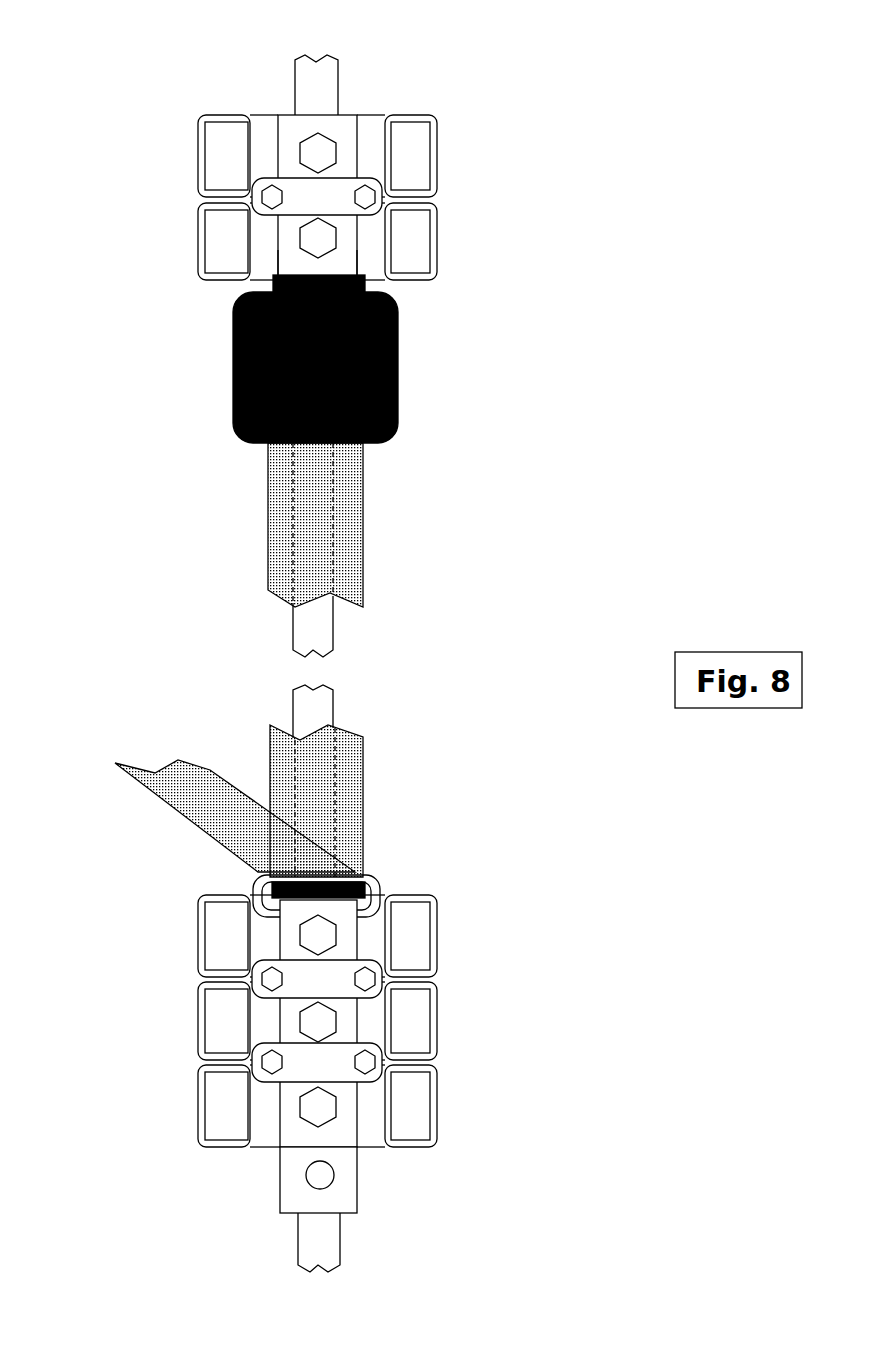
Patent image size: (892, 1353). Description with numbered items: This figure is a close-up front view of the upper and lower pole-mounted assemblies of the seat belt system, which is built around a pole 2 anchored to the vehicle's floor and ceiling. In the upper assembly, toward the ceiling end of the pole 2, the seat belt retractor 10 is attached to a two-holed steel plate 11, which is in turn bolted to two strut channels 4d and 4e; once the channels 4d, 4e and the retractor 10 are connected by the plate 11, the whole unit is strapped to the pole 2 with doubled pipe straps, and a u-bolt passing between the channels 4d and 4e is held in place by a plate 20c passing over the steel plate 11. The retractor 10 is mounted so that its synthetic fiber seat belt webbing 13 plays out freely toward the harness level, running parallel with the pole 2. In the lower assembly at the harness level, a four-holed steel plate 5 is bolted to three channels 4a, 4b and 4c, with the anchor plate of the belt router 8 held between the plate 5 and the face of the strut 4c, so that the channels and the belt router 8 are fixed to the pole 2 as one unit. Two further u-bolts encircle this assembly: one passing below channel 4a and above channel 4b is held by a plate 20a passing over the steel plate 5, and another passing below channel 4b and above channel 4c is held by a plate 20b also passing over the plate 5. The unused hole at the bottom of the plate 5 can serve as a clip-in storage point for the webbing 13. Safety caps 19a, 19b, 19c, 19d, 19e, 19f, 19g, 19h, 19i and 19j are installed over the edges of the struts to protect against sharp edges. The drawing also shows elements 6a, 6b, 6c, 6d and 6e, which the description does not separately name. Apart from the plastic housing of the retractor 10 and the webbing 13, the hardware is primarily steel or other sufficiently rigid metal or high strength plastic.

The pole 2 is at (307, 708).
The strut channel 4a is at (372, 1113).
The strut channel 4b is at (372, 1028).
The strut channel 4c is at (372, 940).
The strut channel 4d is at (372, 238).
The strut channel 4e is at (372, 148).
The four-holed steel plate 5 is at (353, 1197).
The bolt 6a is at (320, 1110).
The bolt 6b is at (312, 1023).
The bolt 6c is at (318, 942).
The bolt 6d is at (318, 240).
The bolt 6e is at (318, 155).
The belt router 8 is at (380, 875).
The seat belt retractor 10 is at (396, 435).
The two-holed steel plate 11 is at (350, 255).
The seat belt webbing 13 is at (343, 540).
The safety cap 19a is at (198, 1107).
The safety cap 19b is at (198, 1023).
The safety cap 19c is at (198, 938).
The safety cap 19d is at (437, 1107).
The safety cap 19e is at (437, 1023).
The safety cap 19f is at (437, 935).
The safety cap 19g is at (198, 245).
The safety cap 19h is at (198, 163).
The safety cap 19i is at (437, 240).
The safety cap 19j is at (437, 159).
The plate 20a is at (338, 1060).
The plate 20b is at (338, 975).
The plate 20c is at (330, 195).